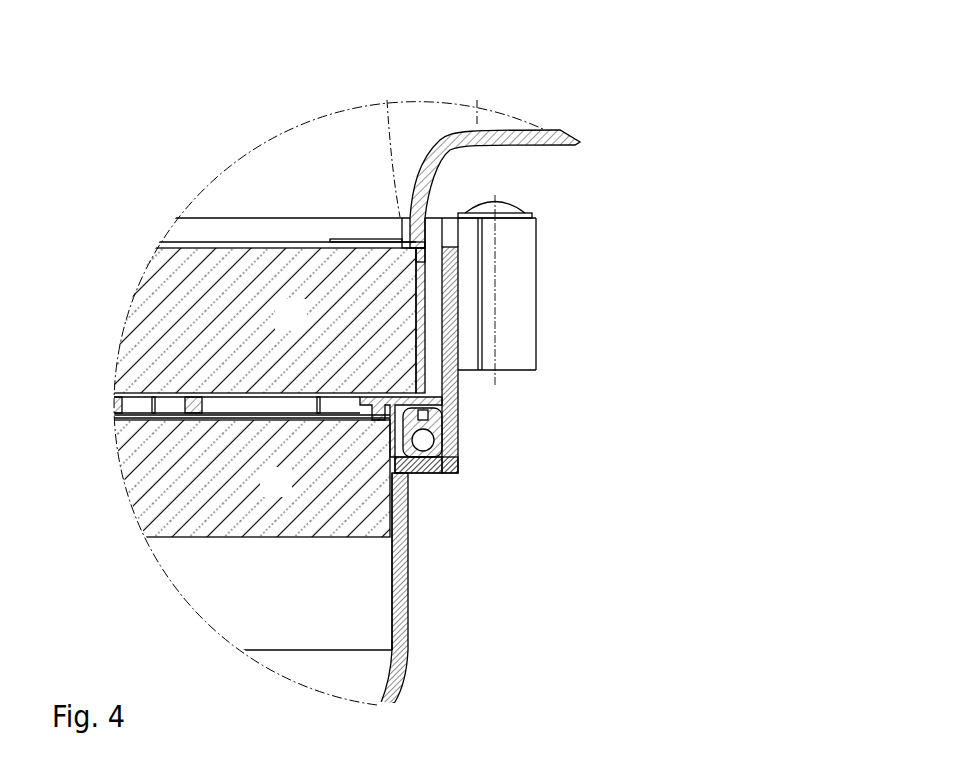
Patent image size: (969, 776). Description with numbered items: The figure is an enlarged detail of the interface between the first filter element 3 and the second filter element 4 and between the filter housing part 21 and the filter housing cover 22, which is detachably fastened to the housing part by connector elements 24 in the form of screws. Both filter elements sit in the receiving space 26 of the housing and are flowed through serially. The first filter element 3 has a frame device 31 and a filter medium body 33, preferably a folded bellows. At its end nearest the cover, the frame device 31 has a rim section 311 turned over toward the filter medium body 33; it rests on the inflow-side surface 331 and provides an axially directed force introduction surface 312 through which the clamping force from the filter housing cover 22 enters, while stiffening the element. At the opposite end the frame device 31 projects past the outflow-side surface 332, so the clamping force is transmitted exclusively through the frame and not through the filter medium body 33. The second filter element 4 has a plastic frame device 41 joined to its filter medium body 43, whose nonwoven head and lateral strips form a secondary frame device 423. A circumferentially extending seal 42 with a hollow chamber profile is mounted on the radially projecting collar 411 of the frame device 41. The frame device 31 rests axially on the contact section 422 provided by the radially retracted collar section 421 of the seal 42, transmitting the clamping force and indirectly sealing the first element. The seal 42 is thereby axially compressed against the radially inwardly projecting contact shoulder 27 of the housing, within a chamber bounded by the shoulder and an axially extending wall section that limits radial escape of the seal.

The first filter element 3 is at (400, 337).
The second filter element 4 is at (410, 507).
The filter housing part 21 is at (404, 678).
The filter housing cover 22 is at (543, 128).
The connector elements 24 is at (507, 200).
The receiving space 26 is at (225, 588).
The contact shoulder 27 is at (423, 470).
The frame device 31 is at (423, 353).
The filter medium body 33 is at (303, 327).
The frame device 41 is at (458, 447).
The circumferentially extending seal 42 is at (544, 377).
The filter medium body 43 is at (263, 494).
The rim section 311 is at (413, 245).
The force introduction surface 312 is at (421, 250).
The inflow-side surface 331 is at (293, 248).
The outflow-side surface 332 is at (340, 407).
The radially projecting collar 411 is at (418, 403).
The collar section 421 is at (443, 402).
The contact section 422 is at (427, 396).
The secondary frame device 423 is at (400, 537).